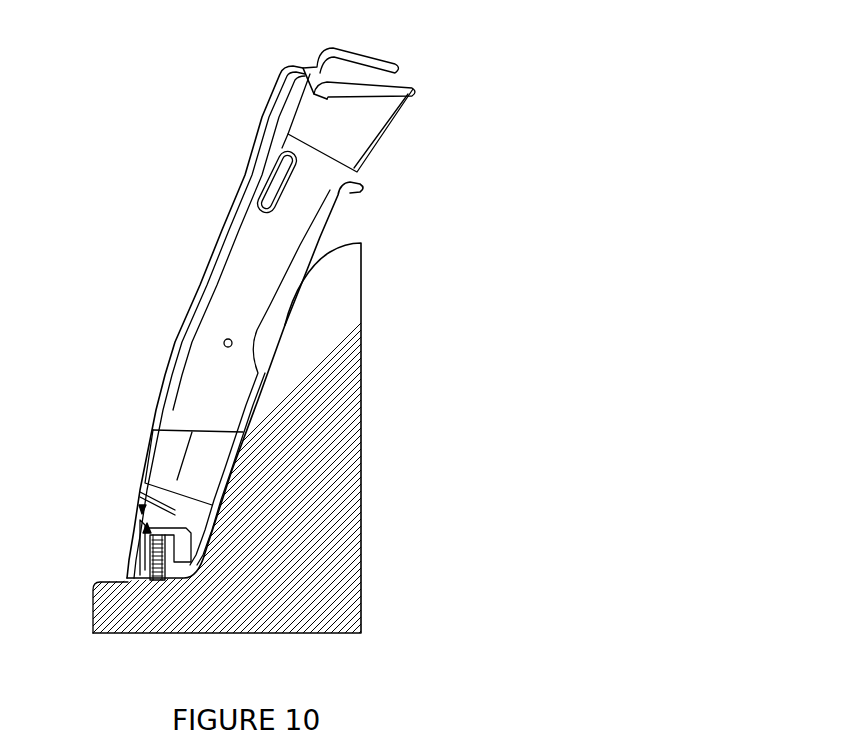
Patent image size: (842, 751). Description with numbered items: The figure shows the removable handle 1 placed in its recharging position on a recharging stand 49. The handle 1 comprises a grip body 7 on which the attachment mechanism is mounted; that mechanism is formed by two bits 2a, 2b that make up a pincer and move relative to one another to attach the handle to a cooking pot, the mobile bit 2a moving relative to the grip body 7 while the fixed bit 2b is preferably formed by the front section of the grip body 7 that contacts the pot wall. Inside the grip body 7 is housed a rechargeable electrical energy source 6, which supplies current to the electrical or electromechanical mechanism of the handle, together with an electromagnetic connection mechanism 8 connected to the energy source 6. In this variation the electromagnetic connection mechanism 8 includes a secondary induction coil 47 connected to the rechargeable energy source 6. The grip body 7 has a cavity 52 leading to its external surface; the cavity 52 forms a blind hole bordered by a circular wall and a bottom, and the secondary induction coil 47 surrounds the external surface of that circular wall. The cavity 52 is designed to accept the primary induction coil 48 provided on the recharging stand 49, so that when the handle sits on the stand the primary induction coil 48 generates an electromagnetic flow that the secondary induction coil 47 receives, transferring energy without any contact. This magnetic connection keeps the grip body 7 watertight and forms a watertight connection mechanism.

The removable handle 1 is at (198, 269).
The mobile bit 2a is at (398, 66).
The fixed bit 2b is at (413, 88).
The rechargeable electrical energy source 6 is at (162, 457).
The grip body 7 is at (178, 340).
The electromagnetic connection mechanism 8 is at (140, 503).
The secondary induction coil 47 is at (134, 563).
The primary induction coil 48 is at (153, 581).
The recharging stand 49 is at (355, 453).
The cavity 52 is at (146, 532).